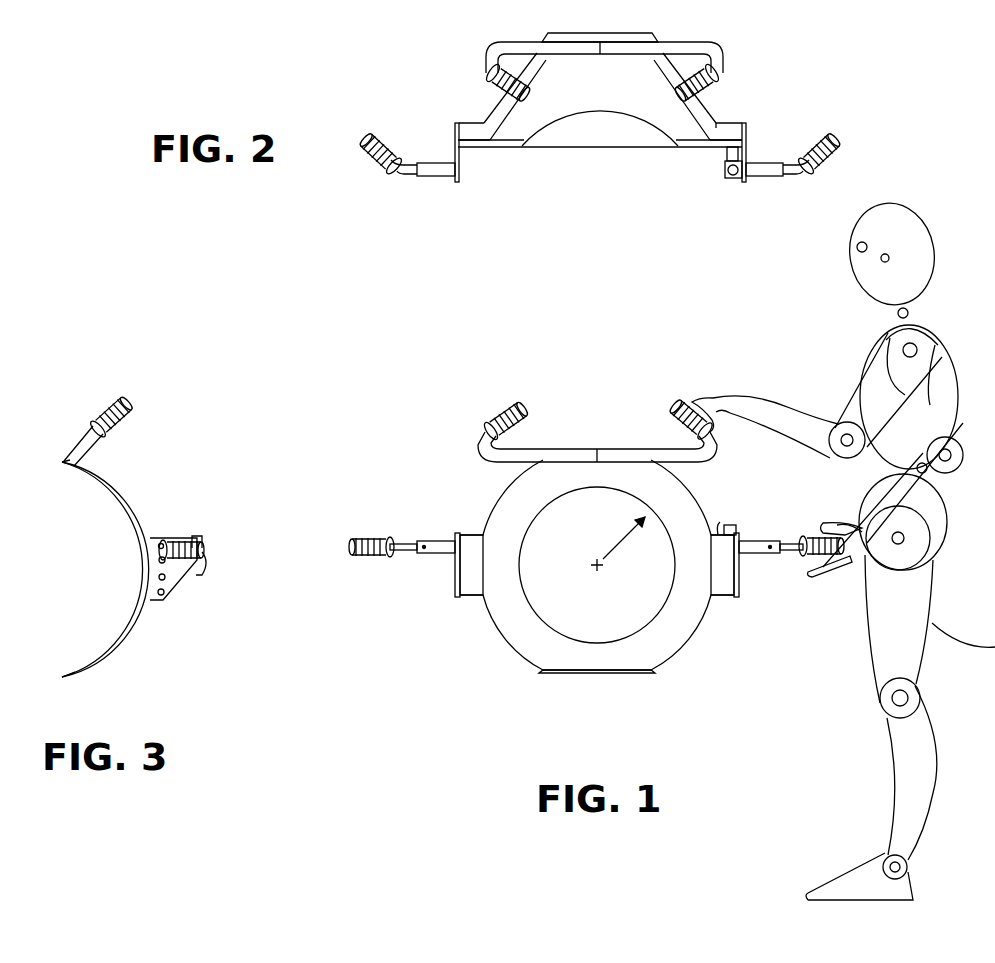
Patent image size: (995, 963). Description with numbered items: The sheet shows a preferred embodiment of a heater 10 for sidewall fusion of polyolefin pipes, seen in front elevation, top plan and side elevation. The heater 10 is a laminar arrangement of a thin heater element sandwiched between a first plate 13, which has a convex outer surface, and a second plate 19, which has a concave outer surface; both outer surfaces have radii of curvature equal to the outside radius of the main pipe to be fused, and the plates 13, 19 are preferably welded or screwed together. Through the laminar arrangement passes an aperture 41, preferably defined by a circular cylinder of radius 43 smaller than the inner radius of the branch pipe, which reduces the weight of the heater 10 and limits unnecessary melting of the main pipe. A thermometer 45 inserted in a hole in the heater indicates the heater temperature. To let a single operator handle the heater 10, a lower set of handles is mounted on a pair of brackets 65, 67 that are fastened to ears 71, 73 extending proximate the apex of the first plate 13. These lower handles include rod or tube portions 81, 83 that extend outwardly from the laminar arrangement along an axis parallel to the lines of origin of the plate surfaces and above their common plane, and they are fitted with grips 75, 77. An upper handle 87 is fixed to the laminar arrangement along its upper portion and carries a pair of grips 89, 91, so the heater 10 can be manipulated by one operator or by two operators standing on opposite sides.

In FIG. 2, the heater 10 is at (563, 200).
In FIG. 1, the heater 10 is at (440, 420).
In FIG. 3, the heater 10 is at (160, 420).
In FIG. 3, the first plate 13 is at (138, 490).
In FIG. 3, the second plate 19 is at (145, 567).
In FIG. 2, the aperture 41 is at (600, 117).
In FIG. 1, the aperture 41 is at (575, 622).
In FIG. 1, the radius 43 is at (615, 548).
In FIG. 1, the thermometer 45 is at (722, 525).
In FIG. 2, the bracket 65 is at (455, 145).
In FIG. 3, the bracket 65 is at (173, 578).
In FIG. 2, the bracket 67 is at (742, 150).
In FIG. 1, the ear 71 is at (472, 590).
In FIG. 1, the ear 73 is at (725, 590).
In FIG. 2, the grip 75 is at (367, 160).
In FIG. 1, the grip 75 is at (366, 556).
In FIG. 3, the grip 75 is at (175, 543).
In FIG. 2, the grip 77 is at (845, 165).
In FIG. 1, the grip 77 is at (835, 558).
In FIG. 2, the rod or tube portion 81 is at (428, 178).
In FIG. 1, the rod or tube portion 81 is at (428, 540).
In FIG. 2, the rod or tube portion 83 is at (770, 180).
In FIG. 1, the rod or tube portion 83 is at (765, 540).
In FIG. 2, the upper handle 87 is at (720, 48).
In FIG. 1, the upper handle 87 is at (600, 447).
In FIG. 2, the grip 89 is at (487, 98).
In FIG. 1, the grip 89 is at (502, 405).
In FIG. 3, the grip 89 is at (113, 410).
In FIG. 2, the grip 91 is at (703, 97).
In FIG. 1, the grip 91 is at (713, 400).